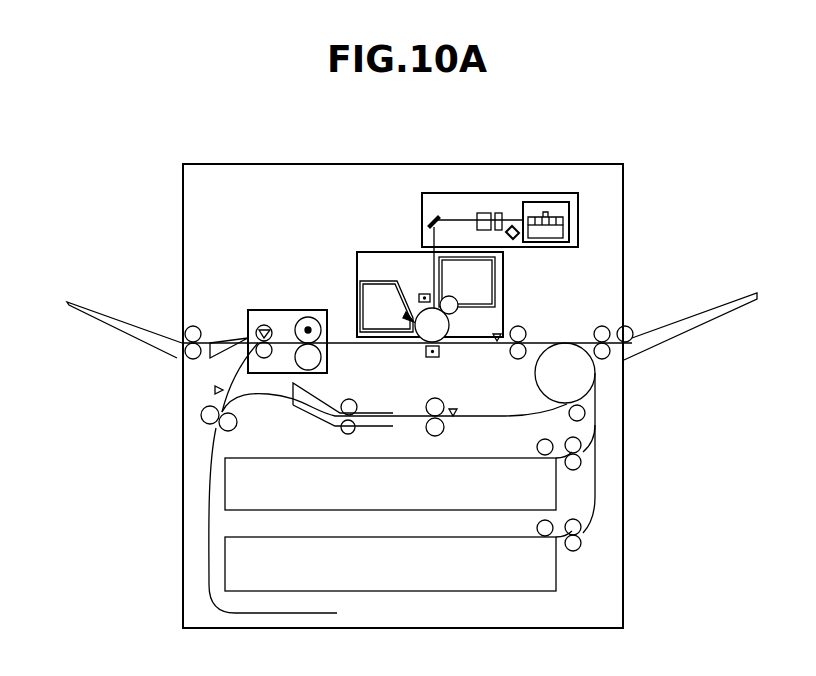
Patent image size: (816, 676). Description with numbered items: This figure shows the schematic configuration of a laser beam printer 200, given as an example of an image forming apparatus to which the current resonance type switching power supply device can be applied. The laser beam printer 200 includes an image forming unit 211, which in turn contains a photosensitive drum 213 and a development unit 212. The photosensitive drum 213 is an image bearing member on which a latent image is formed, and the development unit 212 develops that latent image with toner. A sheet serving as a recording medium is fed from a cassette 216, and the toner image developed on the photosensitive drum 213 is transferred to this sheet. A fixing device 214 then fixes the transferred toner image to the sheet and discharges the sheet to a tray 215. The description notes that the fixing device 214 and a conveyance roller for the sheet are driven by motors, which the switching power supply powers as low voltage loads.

The laser beam printer 200 is at (387, 163).
The image forming unit 211 is at (392, 251).
The development unit 212 is at (452, 303).
The photosensitive drum 213 is at (434, 328).
The fixing device 214 is at (305, 308).
The tray 215 is at (123, 325).
The cassette 216 is at (538, 572).